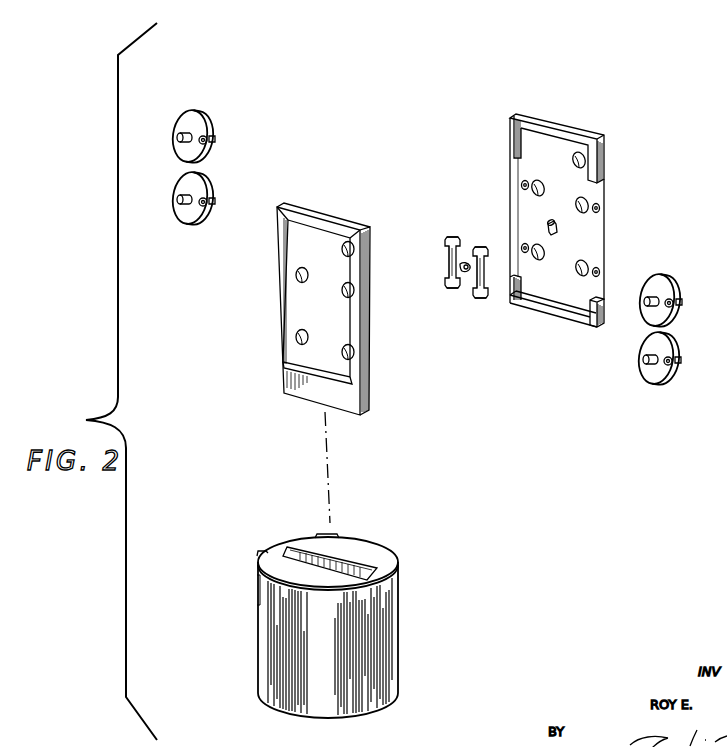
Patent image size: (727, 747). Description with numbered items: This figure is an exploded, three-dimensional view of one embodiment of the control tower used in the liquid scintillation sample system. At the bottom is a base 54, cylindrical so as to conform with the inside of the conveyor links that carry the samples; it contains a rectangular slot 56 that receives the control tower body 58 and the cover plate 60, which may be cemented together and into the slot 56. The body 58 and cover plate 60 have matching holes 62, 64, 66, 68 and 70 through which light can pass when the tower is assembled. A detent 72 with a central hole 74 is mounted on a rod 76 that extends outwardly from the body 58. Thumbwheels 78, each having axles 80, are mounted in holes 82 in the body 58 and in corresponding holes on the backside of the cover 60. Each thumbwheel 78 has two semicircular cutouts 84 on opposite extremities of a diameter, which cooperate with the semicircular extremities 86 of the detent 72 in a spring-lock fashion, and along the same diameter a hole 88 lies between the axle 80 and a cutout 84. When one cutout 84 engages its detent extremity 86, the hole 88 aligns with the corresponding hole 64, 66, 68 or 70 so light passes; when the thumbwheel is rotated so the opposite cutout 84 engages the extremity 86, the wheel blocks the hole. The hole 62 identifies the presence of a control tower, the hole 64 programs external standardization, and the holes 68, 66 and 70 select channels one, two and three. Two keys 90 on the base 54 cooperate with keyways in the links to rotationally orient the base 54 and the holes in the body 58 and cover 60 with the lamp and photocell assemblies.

The base 54 is at (437, 648).
The rectangular slot 56 is at (366, 564).
The control tower body 58 is at (572, 318).
The cover plate 60 is at (372, 370).
The hole 62 is at (352, 248).
The hole 64 is at (303, 270).
The hole 66 is at (354, 290).
The hole 68 is at (305, 337).
The hole 70 is at (354, 352).
The detent 72 is at (488, 290).
The central hole 74 is at (462, 268).
The rod 76 is at (524, 220).
The thumbwheel 78 is at (200, 112).
The axle 80 is at (177, 138).
The hole 82 is at (522, 183).
The semicircular cutout 84 is at (178, 130).
The semicircular extremity 86 is at (450, 237).
The hole 88 is at (207, 137).
The key 90 is at (337, 534).